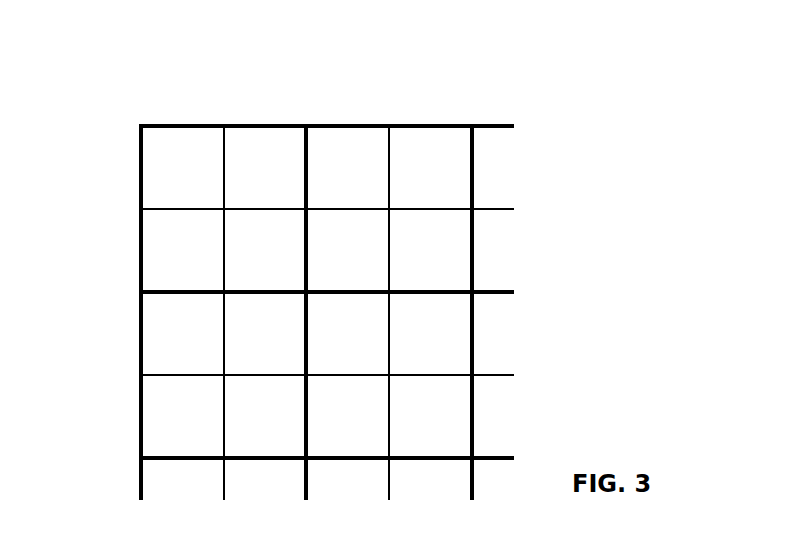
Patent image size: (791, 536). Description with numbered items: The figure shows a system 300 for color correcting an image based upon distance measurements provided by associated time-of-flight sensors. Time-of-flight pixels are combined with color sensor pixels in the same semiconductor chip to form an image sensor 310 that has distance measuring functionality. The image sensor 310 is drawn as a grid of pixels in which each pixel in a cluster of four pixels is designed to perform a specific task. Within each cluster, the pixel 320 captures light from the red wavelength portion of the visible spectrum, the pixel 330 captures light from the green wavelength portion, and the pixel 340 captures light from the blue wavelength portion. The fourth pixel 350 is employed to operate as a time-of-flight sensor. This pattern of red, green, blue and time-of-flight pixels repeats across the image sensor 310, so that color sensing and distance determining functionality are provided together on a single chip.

The image sensor pixel array 300 is at (477, 56).
The image sensor 310 is at (483, 125).
The pixel 320 is at (157, 143).
The pixel 330 is at (292, 143).
The pixel 340 is at (152, 245).
The pixel 350 is at (252, 282).